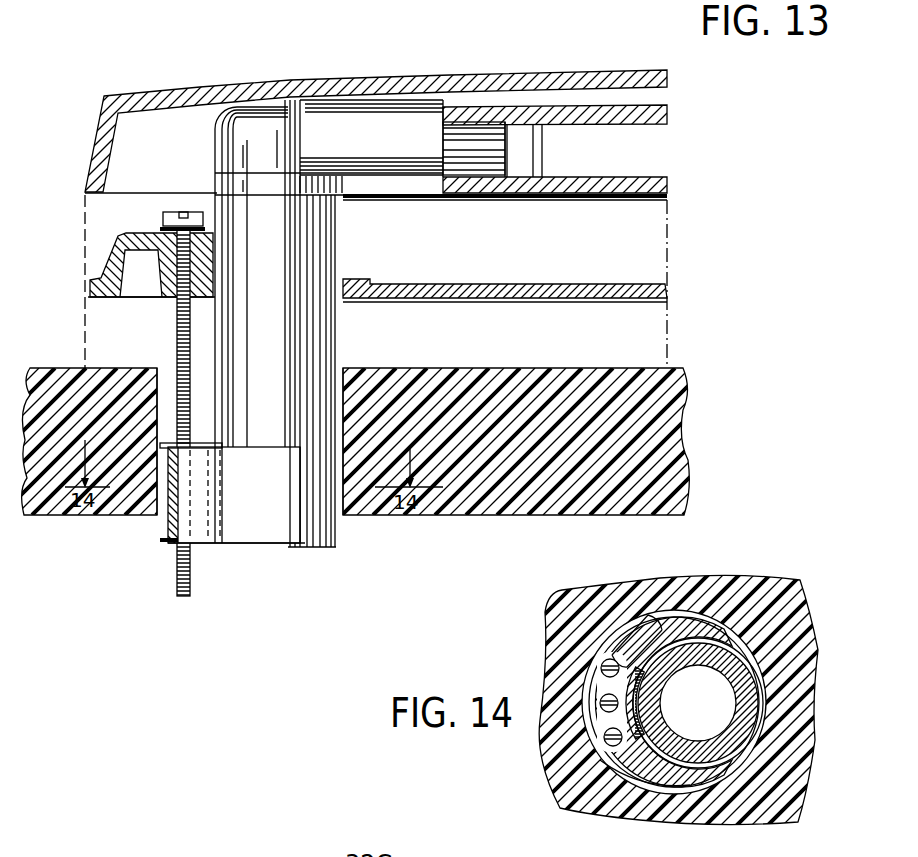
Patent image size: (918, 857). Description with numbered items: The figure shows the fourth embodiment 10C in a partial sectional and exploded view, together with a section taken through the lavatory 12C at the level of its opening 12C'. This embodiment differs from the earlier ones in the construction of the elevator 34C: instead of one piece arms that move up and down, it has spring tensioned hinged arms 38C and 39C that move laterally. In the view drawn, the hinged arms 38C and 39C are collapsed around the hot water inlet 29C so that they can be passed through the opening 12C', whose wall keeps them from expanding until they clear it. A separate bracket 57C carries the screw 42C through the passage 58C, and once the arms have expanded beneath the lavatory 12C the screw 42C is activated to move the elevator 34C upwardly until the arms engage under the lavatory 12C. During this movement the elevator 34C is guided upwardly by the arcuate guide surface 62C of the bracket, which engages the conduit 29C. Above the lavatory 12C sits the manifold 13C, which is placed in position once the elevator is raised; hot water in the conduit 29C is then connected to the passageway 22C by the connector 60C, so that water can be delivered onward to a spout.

In FIG. 13, the fourth embodiment 10C is at (516, 65).
In FIG. 13, the connector 60C is at (328, 130).
In FIG. 13, the passageway 22C is at (653, 128).
In FIG. 13, the manifold 13C is at (670, 188).
In FIG. 13, the passage 58C is at (162, 224).
In FIG. 13, the separate bracket 57C is at (670, 294).
In FIG. 13, the opening 12C' is at (235, 410).
In FIG. 14, the opening 12C' is at (726, 702).
In FIG. 13, the lavatory 12C is at (385, 441).
In FIG. 14, the lavatory 12C is at (696, 701).
In FIG. 13, the hot water inlet 29C is at (340, 545).
In FIG. 14, the hot water inlet 29C is at (737, 760).
In FIG. 13, the elevator 34C is at (270, 526).
In FIG. 14, the elevator 34C is at (598, 713).
In FIG. 13, the screw 42C is at (190, 592).
In FIG. 14, the screw 42C is at (600, 702).
In FIG. 14, the hinged arm 38C is at (632, 665).
In FIG. 14, the hinged arm 39C is at (635, 773).
In FIG. 14, the arcuate guide surface 62C is at (640, 713).